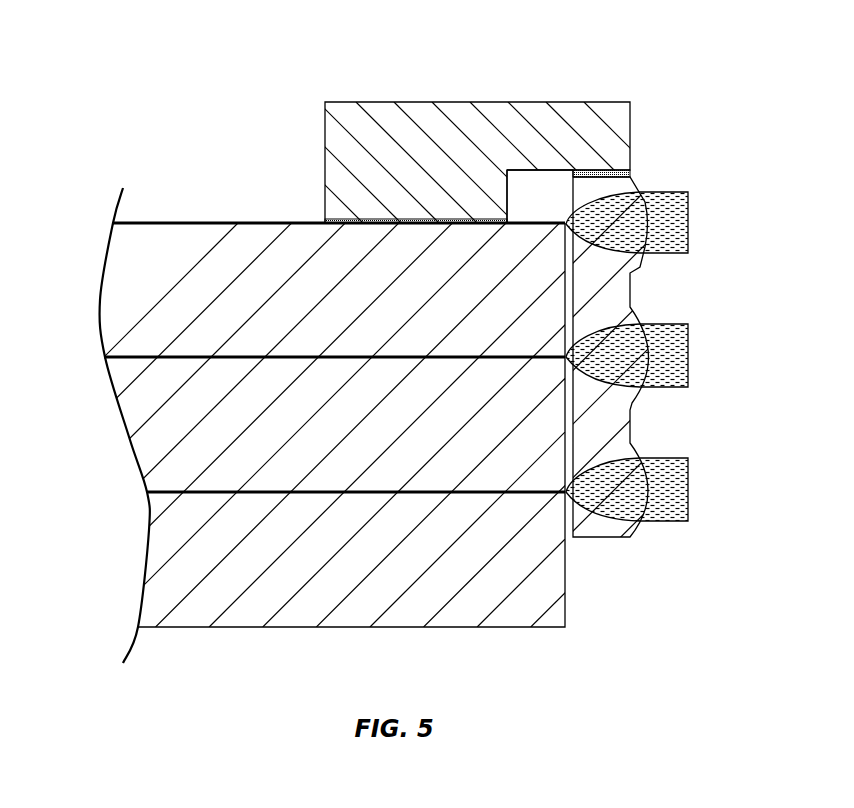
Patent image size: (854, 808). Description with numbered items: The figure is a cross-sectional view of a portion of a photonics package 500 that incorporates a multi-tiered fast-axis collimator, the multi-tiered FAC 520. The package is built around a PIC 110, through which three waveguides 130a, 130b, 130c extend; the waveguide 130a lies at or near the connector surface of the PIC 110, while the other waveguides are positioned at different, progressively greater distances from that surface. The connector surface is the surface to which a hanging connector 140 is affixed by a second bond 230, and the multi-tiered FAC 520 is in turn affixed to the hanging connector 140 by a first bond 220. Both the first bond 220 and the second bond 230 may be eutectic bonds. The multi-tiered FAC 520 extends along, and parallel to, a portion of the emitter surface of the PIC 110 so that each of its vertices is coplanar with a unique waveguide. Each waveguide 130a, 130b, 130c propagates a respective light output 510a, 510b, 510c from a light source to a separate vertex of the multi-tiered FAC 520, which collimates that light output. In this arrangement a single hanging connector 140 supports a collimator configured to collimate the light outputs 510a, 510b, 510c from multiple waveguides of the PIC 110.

The photonics package 500 is at (213, 50).
The PIC 110 is at (350, 627).
The waveguide 130a is at (113, 223).
The waveguide 130b is at (104, 357).
The waveguide 130c is at (147, 492).
The hanging connector 140 is at (478, 102).
The second bond 230 is at (342, 219).
The first bond 220 is at (618, 171).
The multi-tiered FAC 520 is at (646, 186).
The light output 510a is at (690, 222).
The light output 510b is at (690, 355).
The light output 510c is at (690, 491).